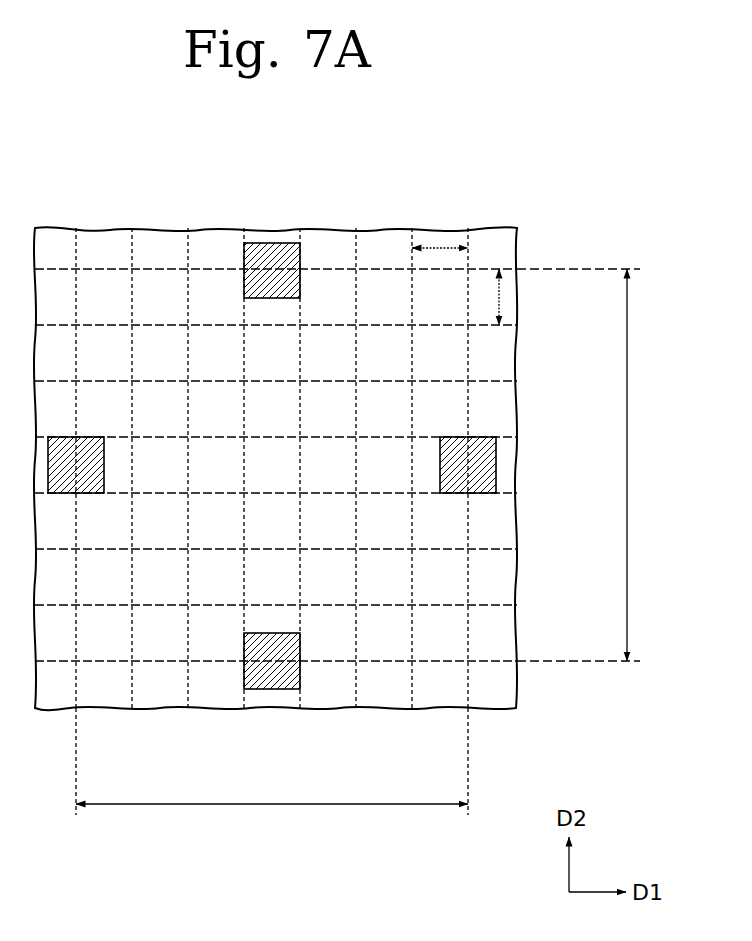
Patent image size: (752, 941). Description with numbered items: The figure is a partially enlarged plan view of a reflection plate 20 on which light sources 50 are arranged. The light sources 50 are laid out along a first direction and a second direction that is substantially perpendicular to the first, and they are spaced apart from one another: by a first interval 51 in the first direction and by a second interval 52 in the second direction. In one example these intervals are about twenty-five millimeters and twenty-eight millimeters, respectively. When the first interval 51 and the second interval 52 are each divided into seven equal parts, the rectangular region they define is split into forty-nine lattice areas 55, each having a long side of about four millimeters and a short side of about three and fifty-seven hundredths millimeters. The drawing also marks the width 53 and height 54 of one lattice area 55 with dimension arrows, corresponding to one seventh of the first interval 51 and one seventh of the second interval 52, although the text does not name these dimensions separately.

The reflection plate 20 is at (485, 224).
The light source 50 is at (272, 243).
The first interval 51 is at (272, 761).
The second interval 52 is at (588, 465).
The first grid spacing 53 is at (437, 248).
The second grid spacing 54 is at (499, 297).
The lattice area 55 is at (416, 298).